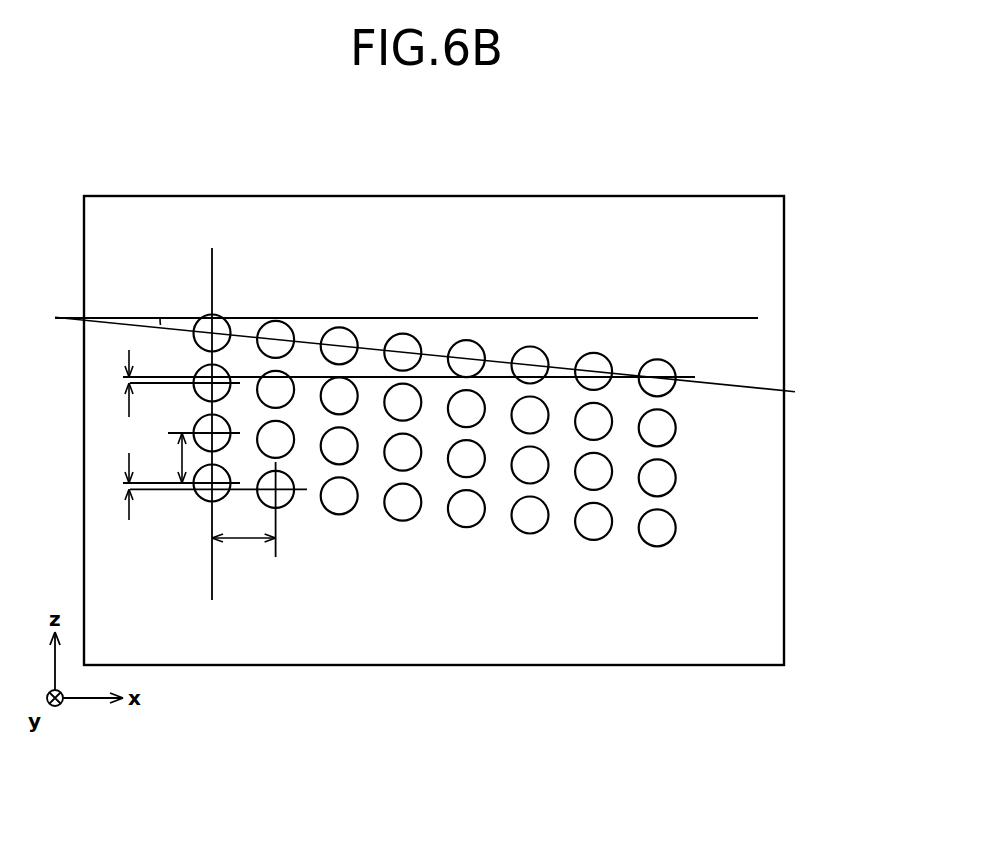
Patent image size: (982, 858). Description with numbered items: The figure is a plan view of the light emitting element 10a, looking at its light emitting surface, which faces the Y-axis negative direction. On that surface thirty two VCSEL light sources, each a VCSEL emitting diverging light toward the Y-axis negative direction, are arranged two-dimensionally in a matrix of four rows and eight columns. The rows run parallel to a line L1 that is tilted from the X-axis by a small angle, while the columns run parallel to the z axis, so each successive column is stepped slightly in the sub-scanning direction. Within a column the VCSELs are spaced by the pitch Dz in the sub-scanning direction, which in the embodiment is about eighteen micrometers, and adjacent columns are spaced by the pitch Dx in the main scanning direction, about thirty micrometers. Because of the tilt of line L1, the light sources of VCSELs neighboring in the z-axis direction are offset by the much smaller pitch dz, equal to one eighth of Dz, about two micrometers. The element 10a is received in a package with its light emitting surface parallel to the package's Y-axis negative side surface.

The light emitting element 10a is at (712, 196).
The element VCSEL is at (275, 320).
The line L1 is at (442, 361).
The pitch dz is at (114, 435).
The pitch Dz is at (163, 458).
The pitch Dx is at (244, 553).